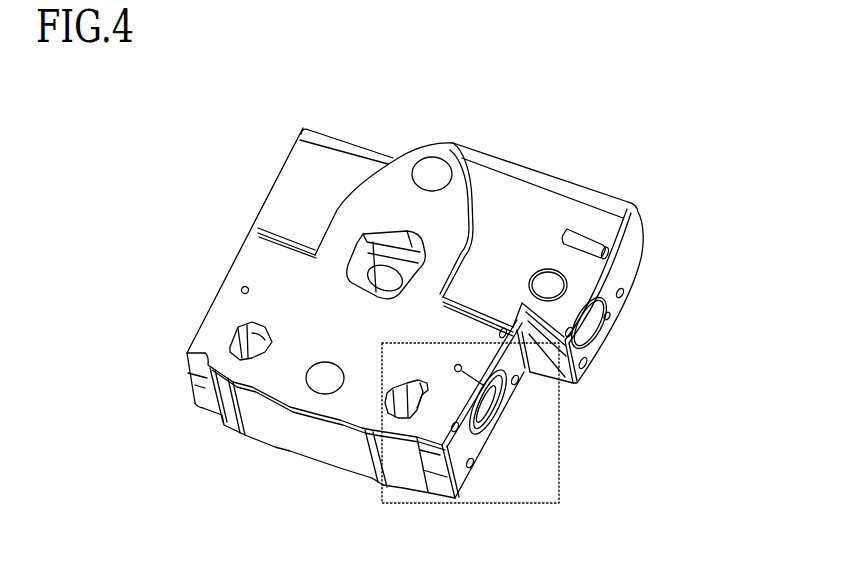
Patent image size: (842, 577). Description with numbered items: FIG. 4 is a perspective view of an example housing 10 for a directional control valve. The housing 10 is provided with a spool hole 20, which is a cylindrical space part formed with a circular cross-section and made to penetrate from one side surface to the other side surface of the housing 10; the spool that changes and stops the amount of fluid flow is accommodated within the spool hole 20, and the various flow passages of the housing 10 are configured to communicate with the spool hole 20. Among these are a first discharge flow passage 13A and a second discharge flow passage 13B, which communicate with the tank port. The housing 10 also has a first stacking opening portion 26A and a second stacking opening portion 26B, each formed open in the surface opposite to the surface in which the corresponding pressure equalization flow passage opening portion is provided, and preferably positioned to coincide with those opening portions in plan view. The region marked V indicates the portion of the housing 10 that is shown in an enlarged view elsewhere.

The housing 10 is at (370, 197).
The first discharge flow passage 13A is at (397, 414).
The second discharge flow passage 13B is at (246, 362).
The spool hole 20 is at (494, 421).
The first stacking opening portion 26A is at (487, 393).
The second stacking opening portion 26B is at (240, 288).
The region shown in FIG. 5 V is at (560, 473).